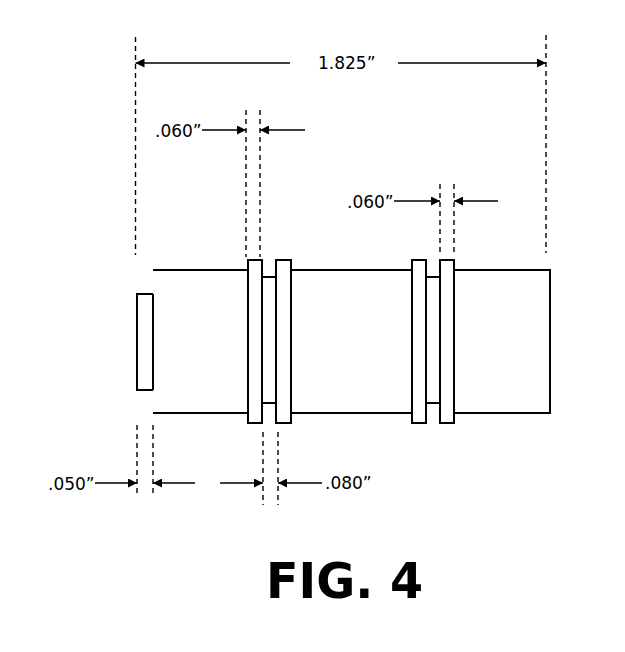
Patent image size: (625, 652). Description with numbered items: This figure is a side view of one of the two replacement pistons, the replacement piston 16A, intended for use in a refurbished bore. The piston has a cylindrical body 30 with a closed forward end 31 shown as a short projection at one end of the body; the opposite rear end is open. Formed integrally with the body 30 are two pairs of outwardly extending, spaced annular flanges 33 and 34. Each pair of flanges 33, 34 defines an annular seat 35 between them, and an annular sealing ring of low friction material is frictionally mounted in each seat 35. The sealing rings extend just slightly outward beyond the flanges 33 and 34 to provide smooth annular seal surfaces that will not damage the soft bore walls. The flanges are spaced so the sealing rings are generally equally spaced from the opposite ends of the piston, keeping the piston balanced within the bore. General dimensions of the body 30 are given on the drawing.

The replacement piston 16A is at (479, 431).
The cylindrical body 30 is at (209, 281).
The closed forward end 31 is at (137, 355).
The annular flange 33 is at (253, 368).
The annular flange 34 is at (285, 353).
The annular seat 35 is at (268, 308).